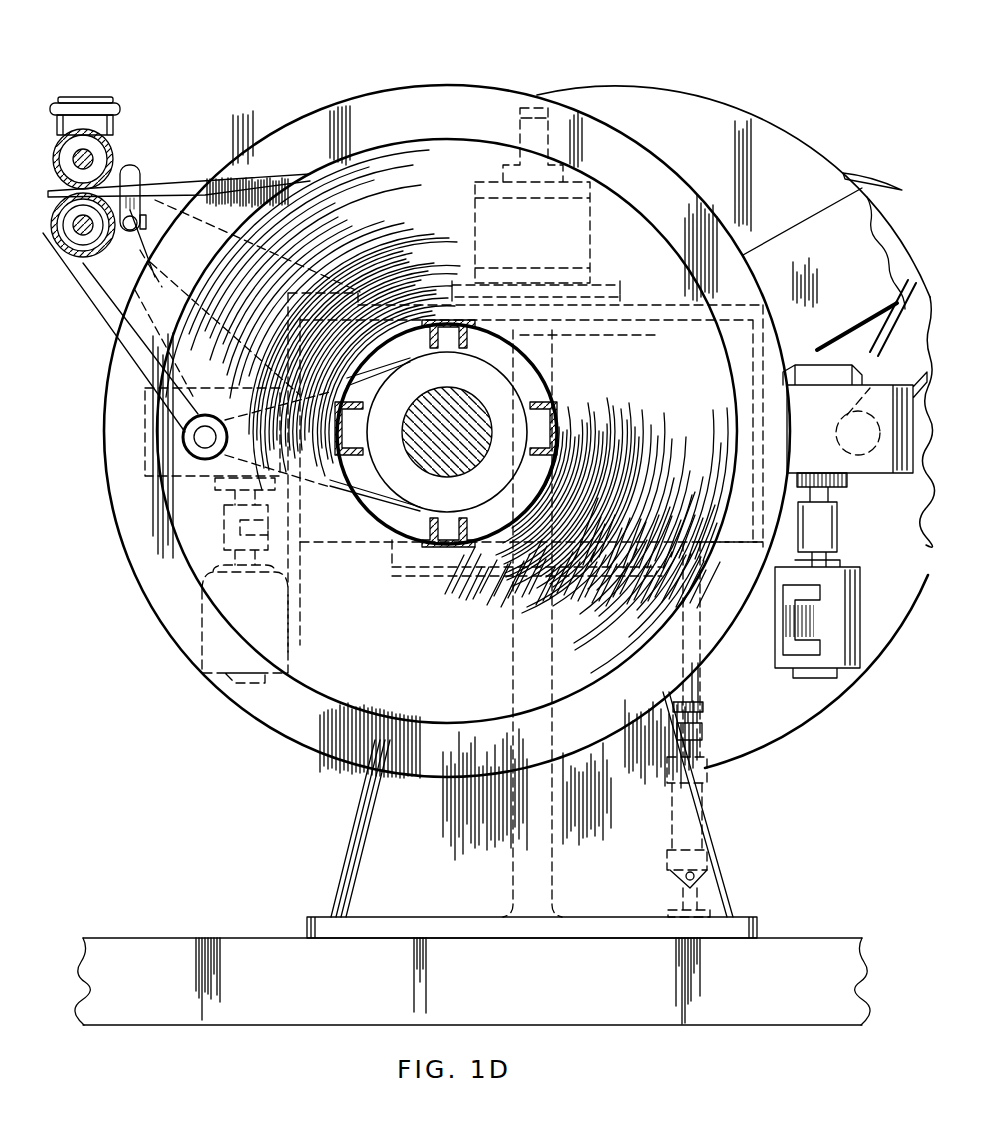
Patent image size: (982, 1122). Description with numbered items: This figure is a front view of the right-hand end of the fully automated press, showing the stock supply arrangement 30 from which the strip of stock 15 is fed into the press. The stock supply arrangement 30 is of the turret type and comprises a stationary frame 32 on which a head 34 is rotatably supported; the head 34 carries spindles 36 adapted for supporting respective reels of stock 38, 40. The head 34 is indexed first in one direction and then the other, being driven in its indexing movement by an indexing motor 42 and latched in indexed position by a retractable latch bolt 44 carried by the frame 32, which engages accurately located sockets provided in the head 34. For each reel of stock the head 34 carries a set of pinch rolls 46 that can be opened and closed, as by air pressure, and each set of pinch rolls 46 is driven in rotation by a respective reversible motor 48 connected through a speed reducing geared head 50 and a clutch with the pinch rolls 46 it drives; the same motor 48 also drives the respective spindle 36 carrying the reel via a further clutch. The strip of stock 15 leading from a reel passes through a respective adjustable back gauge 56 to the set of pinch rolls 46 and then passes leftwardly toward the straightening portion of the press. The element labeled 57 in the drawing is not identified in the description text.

The strip of stock 15 is at (200, 192).
The stock supply arrangement 30 is at (690, 100).
The stationary frame 32 is at (370, 853).
The head 34 is at (405, 545).
The spindle 36 is at (467, 437).
The reel of stock 38 is at (330, 705).
The reel of stock 40 is at (795, 148).
The indexing motor 42 is at (490, 222).
The retractable latch bolt 44 is at (697, 713).
The pinch rolls 46 is at (117, 152).
The reversible motor 48 is at (225, 640).
The speed reducing geared head 50 is at (187, 463).
The adjustable back gauge 56 is at (137, 178).
The cap 57 is at (118, 103).